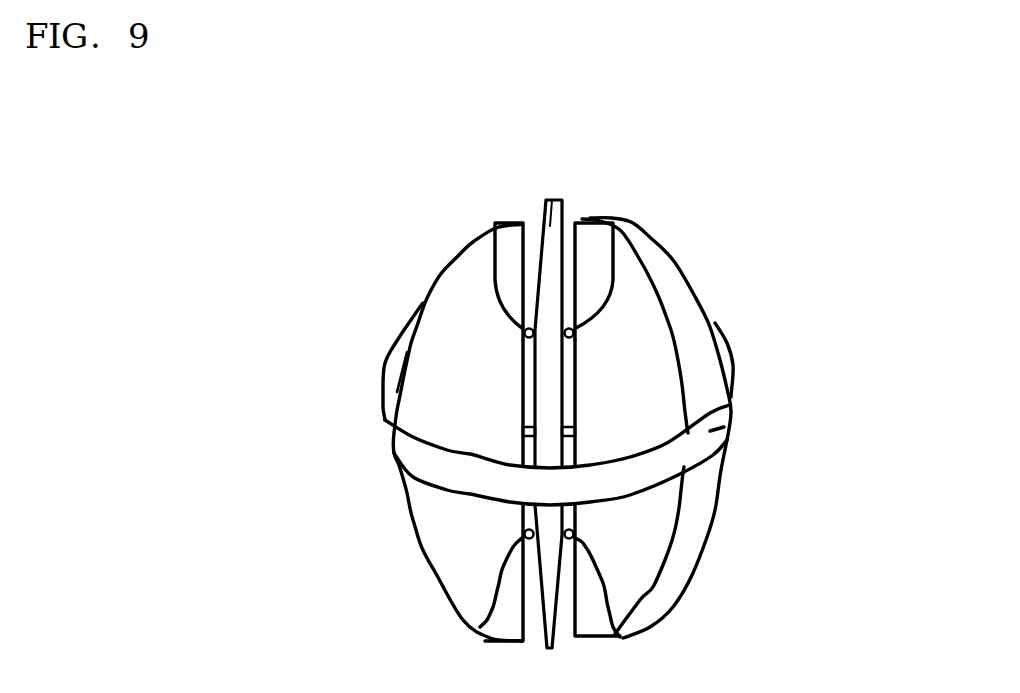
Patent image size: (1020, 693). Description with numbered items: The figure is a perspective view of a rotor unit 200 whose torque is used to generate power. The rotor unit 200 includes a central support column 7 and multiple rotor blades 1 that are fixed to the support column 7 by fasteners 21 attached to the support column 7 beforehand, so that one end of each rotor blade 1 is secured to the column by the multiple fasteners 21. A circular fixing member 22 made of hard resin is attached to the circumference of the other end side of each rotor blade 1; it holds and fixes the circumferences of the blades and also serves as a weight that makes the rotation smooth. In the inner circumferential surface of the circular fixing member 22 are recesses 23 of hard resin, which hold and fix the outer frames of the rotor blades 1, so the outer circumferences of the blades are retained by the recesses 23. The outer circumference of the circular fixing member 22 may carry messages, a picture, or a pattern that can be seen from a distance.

The rotor blade 1 is at (667, 280).
The support column 7 is at (555, 201).
The fastener 21 is at (496, 227).
The circular fixing member 22 is at (710, 428).
The recess 23 is at (394, 362).
The rotor unit 200 is at (760, 268).